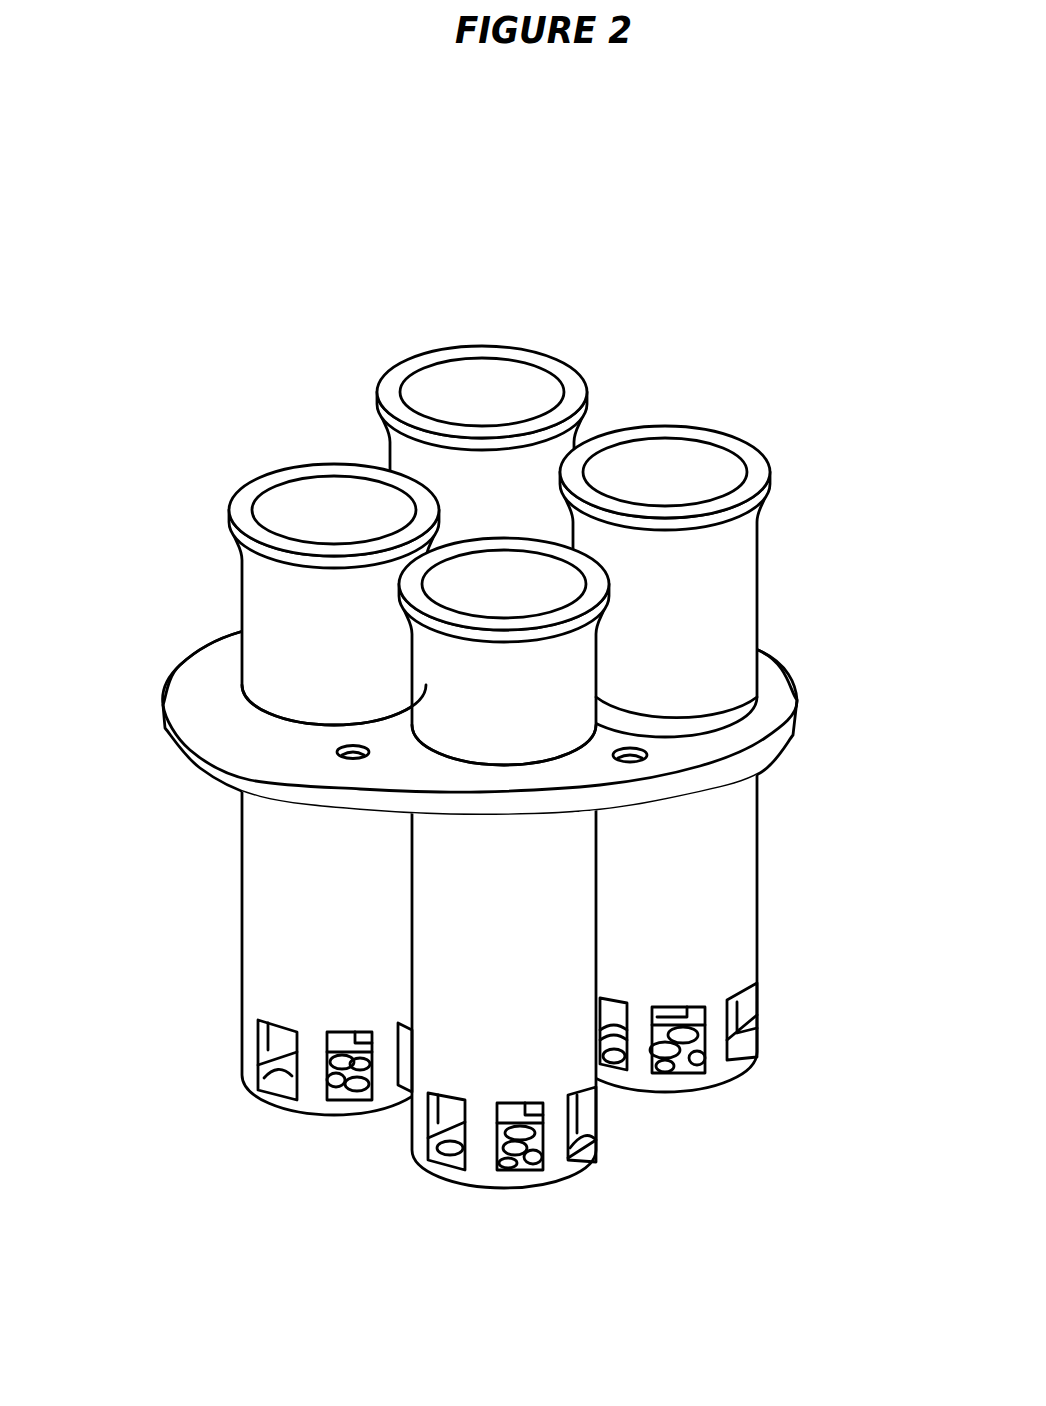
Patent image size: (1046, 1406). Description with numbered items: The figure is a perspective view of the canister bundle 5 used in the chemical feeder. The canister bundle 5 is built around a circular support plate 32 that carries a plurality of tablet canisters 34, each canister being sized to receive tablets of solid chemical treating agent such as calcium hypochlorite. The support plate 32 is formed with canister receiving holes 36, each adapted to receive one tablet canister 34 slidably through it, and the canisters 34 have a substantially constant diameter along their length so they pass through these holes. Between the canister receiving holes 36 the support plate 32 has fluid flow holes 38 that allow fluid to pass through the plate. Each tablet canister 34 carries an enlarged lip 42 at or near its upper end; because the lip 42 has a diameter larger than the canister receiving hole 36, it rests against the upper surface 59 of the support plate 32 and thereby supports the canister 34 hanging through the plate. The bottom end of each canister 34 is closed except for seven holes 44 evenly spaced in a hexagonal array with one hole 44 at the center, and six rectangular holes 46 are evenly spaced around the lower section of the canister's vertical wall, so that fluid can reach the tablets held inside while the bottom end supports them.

The canister bundle 5 is at (155, 1316).
The support plate 32 is at (755, 755).
The tablet canister 34 is at (552, 455).
The canister receiving hole 36 is at (757, 713).
The fluid flow hole 38 is at (340, 760).
The enlarged lip 42 is at (382, 425).
The hole 44 is at (728, 1050).
The rectangular hole 46 is at (727, 1005).
The upper surface 59 is at (197, 685).